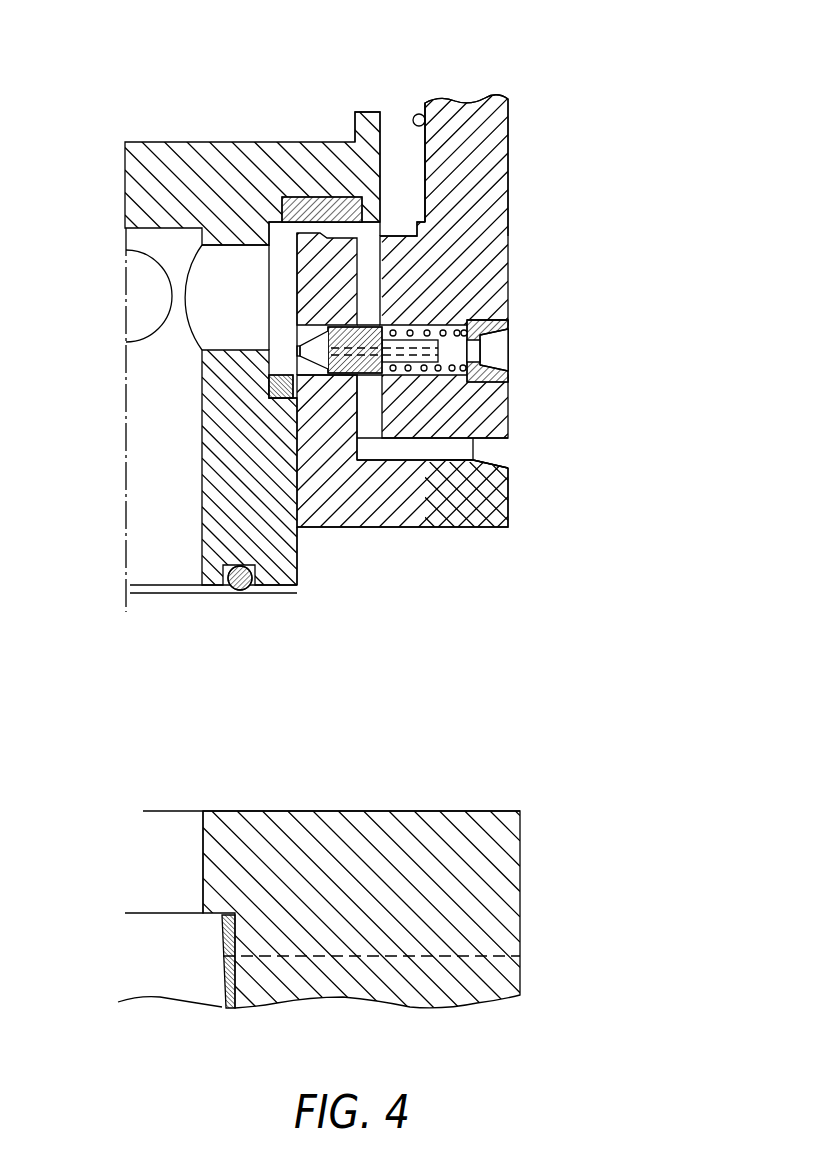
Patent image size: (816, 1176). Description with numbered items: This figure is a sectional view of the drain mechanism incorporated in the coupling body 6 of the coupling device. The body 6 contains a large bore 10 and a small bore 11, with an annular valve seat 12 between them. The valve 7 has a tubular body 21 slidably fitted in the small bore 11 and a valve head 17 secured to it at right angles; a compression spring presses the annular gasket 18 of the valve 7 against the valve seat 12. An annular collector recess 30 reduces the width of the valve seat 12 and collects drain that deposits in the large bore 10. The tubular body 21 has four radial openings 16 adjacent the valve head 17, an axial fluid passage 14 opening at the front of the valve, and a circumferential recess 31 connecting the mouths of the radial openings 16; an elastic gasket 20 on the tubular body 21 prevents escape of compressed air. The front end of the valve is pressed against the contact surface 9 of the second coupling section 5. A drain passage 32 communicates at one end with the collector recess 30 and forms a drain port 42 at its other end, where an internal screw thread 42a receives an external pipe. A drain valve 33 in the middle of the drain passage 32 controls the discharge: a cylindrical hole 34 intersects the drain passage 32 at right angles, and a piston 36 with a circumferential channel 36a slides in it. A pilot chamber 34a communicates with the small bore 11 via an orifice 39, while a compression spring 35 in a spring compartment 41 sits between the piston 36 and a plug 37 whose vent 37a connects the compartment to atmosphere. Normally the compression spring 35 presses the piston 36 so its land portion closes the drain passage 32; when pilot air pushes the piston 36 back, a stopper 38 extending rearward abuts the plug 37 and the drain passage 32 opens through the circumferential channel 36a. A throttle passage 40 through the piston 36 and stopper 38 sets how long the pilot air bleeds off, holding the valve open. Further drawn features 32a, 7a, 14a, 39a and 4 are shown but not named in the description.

The valve head 17 is at (143, 142).
The annular valve seat 12 is at (250, 243).
The annular gasket 18 is at (306, 196).
The valve 7 is at (366, 112).
The body 6 is at (503, 95).
The large bore 10 is at (426, 120).
The annular collector recess 30 is at (436, 194).
The throttle passage 40 is at (447, 237).
The stopper 38 is at (418, 330).
The spring compartment 41 is at (470, 322).
The plug 37 is at (505, 333).
The vent 37a is at (482, 355).
The cylindrical hole 34 is at (478, 398).
The drain port 42 is at (495, 448).
The internal screw thread 42a is at (470, 456).
The wall 32a is at (497, 482).
The compression spring 35 is at (500, 528).
The drain valve 33 is at (463, 453).
The drain passage 32 is at (407, 448).
The piston 36 is at (362, 377).
The circumferential channel 36a is at (348, 377).
The wall 7a is at (298, 546).
The small bore 11 is at (279, 548).
The tubular body 21 is at (265, 567).
The end plate 14a is at (170, 577).
The pilot chamber 34a is at (203, 527).
The elastic gasket 20 is at (269, 388).
The axial fluid passage 14 is at (148, 447).
The radial openings 16 is at (204, 333).
The ball surface 39a is at (180, 325).
The orifice 39 is at (292, 310).
The circumferential recess 31 is at (272, 285).
The bracket 4 is at (202, 840).
The contact surface 9 is at (473, 811).
The second coupling section 5 is at (512, 847).